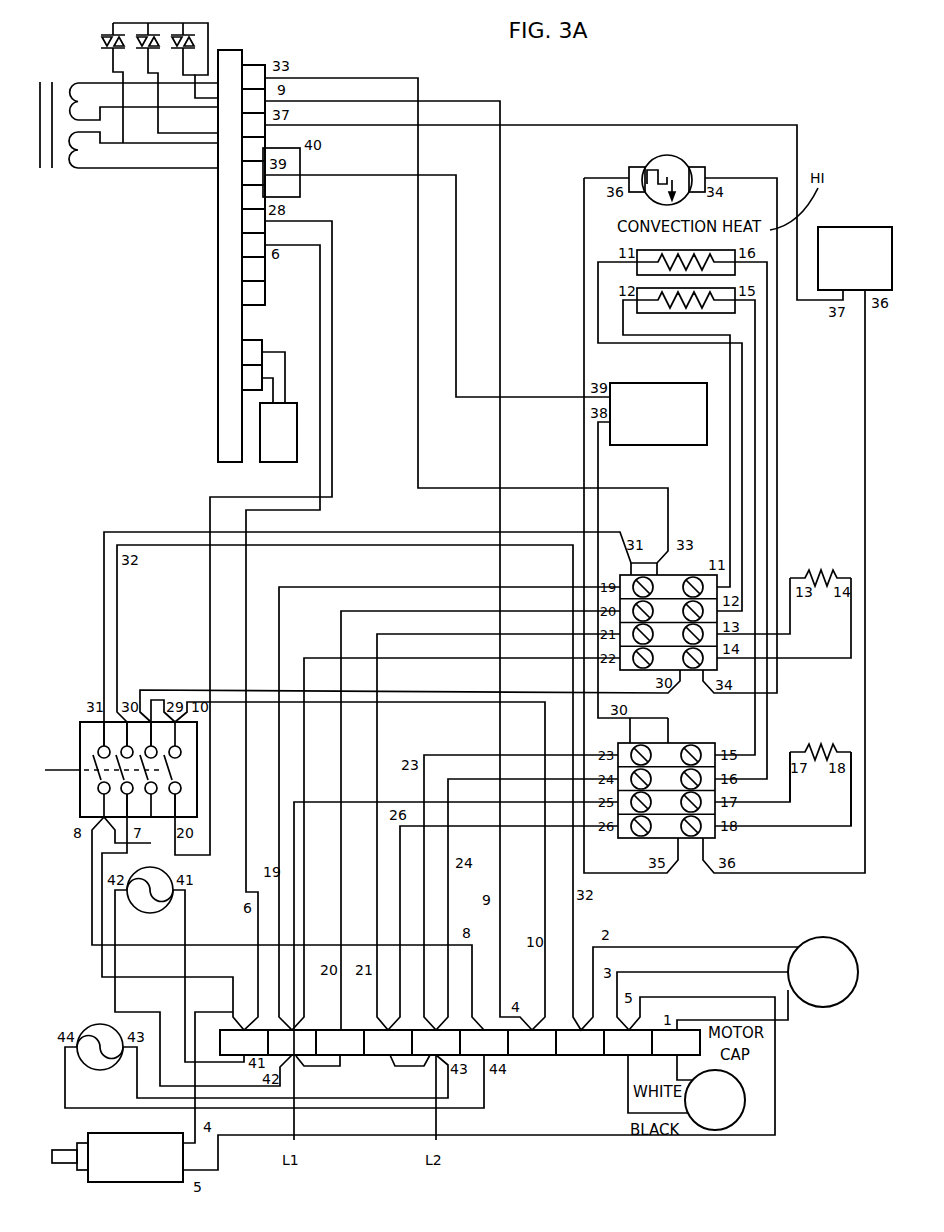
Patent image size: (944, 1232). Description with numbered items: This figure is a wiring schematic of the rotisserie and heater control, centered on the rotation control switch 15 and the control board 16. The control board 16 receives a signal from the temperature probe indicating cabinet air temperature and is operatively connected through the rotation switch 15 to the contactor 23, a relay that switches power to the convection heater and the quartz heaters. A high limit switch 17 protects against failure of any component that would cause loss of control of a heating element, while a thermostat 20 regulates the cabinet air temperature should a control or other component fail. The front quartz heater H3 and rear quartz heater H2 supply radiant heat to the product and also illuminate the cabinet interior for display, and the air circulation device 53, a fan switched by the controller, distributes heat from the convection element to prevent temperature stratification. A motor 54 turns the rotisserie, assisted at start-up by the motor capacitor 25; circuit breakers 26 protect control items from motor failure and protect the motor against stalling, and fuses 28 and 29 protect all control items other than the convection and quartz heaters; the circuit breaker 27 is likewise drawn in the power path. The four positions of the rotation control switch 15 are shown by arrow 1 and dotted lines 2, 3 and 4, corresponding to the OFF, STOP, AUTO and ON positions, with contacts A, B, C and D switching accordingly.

The arrow 1 is at (45, 770).
The dotted line 2 is at (43, 763).
The dotted line 3 is at (47, 761).
The dotted line 4 is at (52, 765).
The rotation control switch 15 is at (80, 720).
The control board 16 is at (240, 52).
The high limit switch 17 is at (672, 157).
The thermostat 20 is at (660, 446).
The contactor 23 is at (743, 797).
The motor capacitor 25 is at (705, 1117).
The circuit breakers 26 is at (568, 1057).
The circuit breaker 27 is at (143, 1183).
The fuse 28 is at (88, 1026).
The fuse 29 is at (143, 868).
The air circulation device 53 is at (852, 230).
The motor 54 is at (820, 1006).
The rear quartz heater H2 is at (813, 705).
The front quartz heater H3 is at (813, 528).